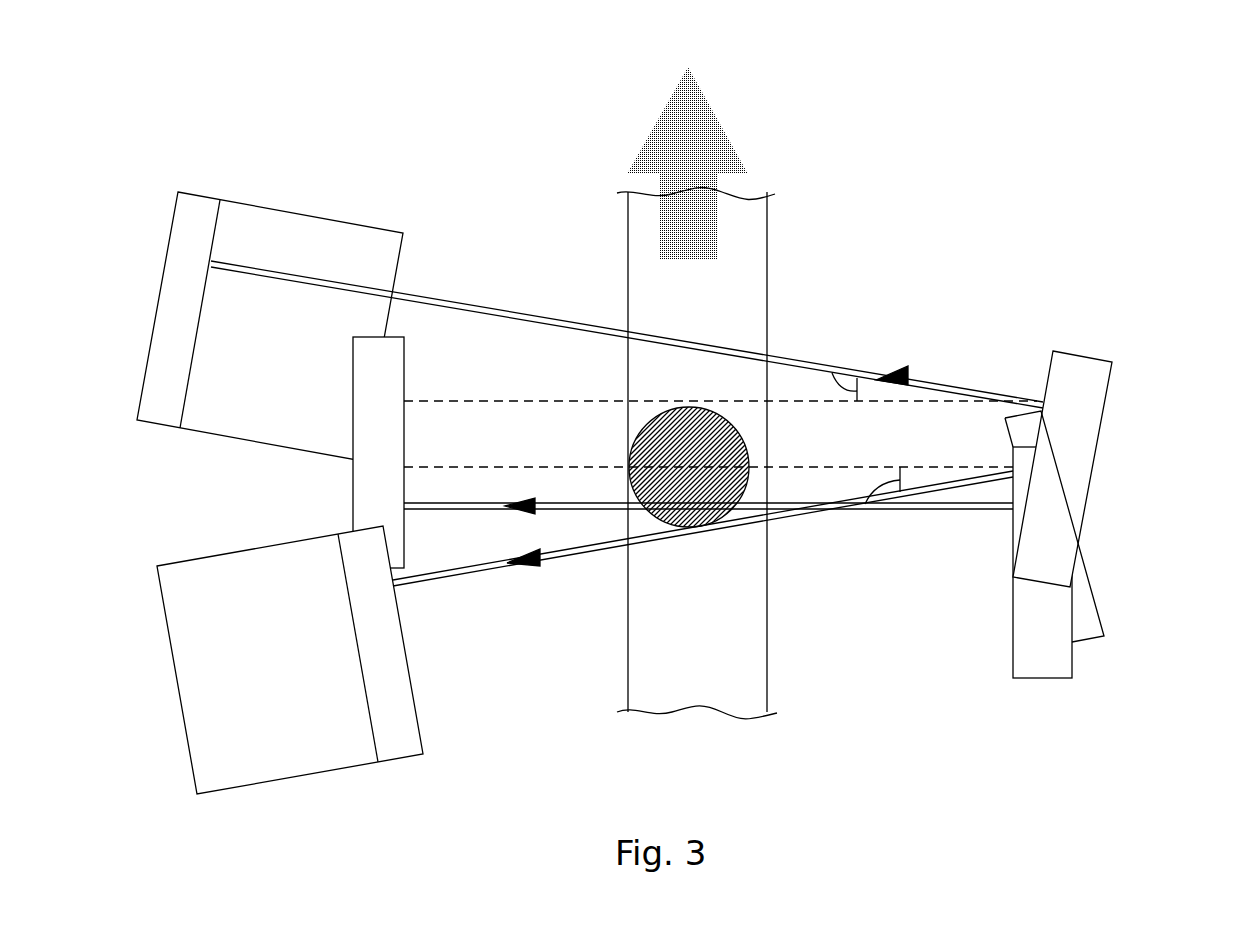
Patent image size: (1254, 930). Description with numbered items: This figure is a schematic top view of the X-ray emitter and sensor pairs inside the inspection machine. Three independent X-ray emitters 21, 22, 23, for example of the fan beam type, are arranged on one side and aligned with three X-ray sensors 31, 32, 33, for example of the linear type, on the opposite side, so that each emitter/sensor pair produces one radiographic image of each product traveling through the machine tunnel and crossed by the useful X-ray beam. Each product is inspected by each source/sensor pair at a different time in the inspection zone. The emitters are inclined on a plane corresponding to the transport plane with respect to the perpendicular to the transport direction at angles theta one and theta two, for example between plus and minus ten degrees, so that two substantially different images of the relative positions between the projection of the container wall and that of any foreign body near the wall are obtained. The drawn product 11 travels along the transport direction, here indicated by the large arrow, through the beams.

The particle 11 is at (738, 428).
The X-ray emitter 21 is at (1092, 377).
The X-ray emitter 22 is at (1093, 617).
The X-ray emitter 23 is at (1063, 667).
The X-ray sensor 31 is at (297, 218).
The X-ray sensor 32 is at (303, 757).
The X-ray sensor 33 is at (365, 488).